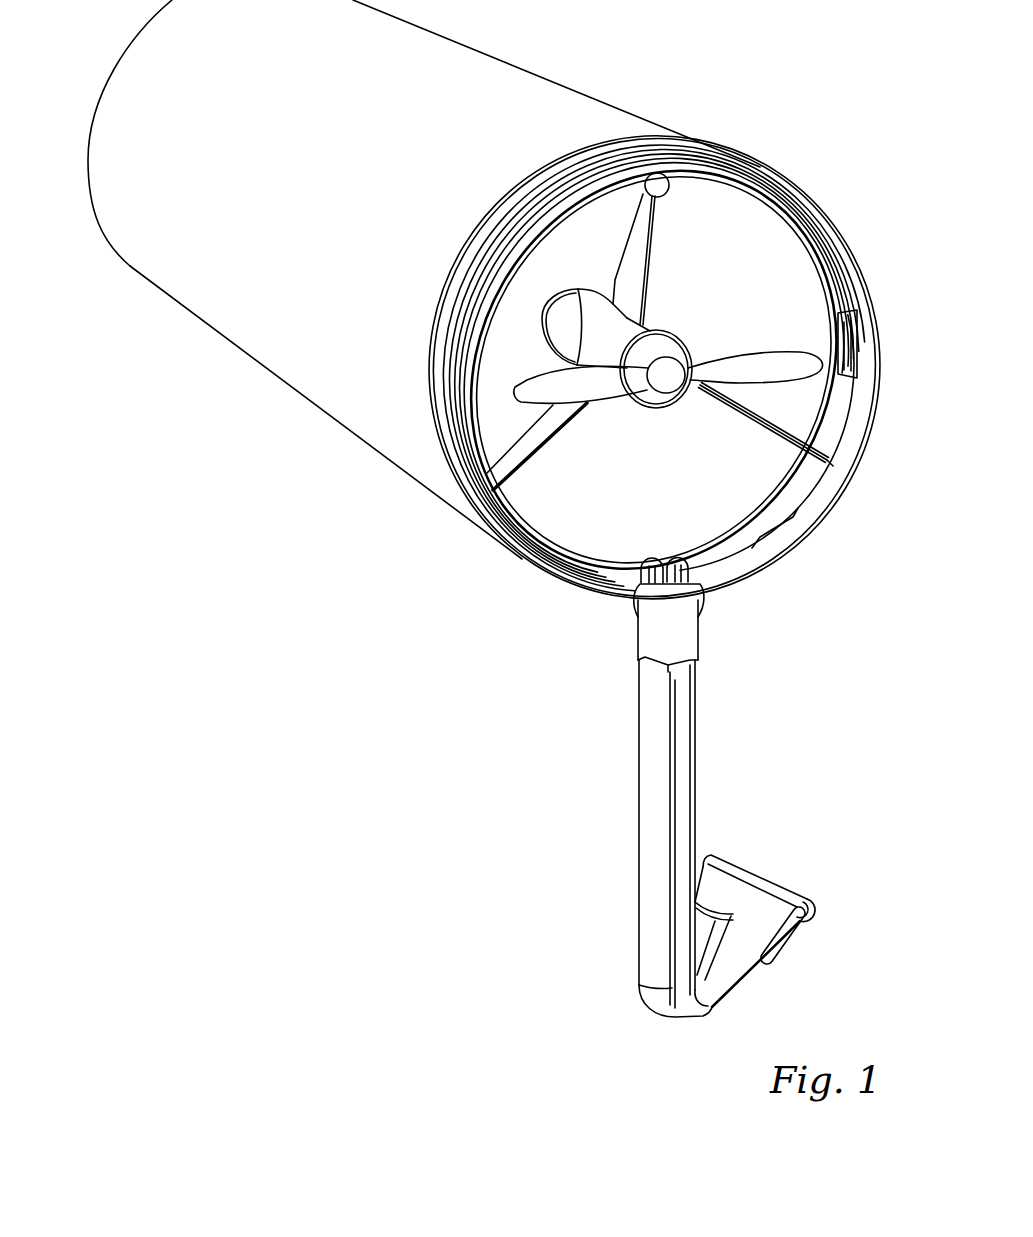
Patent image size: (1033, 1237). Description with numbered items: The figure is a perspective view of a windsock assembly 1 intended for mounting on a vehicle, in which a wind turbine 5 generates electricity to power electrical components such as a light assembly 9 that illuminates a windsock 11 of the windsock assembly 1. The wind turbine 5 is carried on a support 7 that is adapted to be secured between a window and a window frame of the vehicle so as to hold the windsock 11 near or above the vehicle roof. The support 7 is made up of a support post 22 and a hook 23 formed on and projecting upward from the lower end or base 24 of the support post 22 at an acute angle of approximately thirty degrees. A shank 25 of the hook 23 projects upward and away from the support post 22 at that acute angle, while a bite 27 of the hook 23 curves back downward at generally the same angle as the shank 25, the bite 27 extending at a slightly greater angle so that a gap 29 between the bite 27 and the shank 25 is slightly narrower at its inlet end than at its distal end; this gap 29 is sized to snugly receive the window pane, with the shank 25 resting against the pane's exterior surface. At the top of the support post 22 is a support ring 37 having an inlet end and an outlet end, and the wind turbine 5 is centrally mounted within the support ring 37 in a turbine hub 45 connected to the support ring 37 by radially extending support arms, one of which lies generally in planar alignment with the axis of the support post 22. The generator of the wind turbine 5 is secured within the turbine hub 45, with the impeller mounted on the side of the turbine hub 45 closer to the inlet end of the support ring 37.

The windsock assembly 1 is at (638, 85).
The wind turbine 5 is at (661, 318).
The support 7 is at (628, 803).
The light assembly 9 is at (564, 308).
The windsock 11 is at (287, 383).
The support post 22 is at (703, 745).
The hook 23 is at (826, 871).
The base 24 is at (658, 1012).
The shank 25 is at (750, 903).
The bite 27 is at (786, 932).
The gap 29 is at (768, 962).
The support ring 37 is at (785, 555).
The turbine hub 45 is at (630, 406).